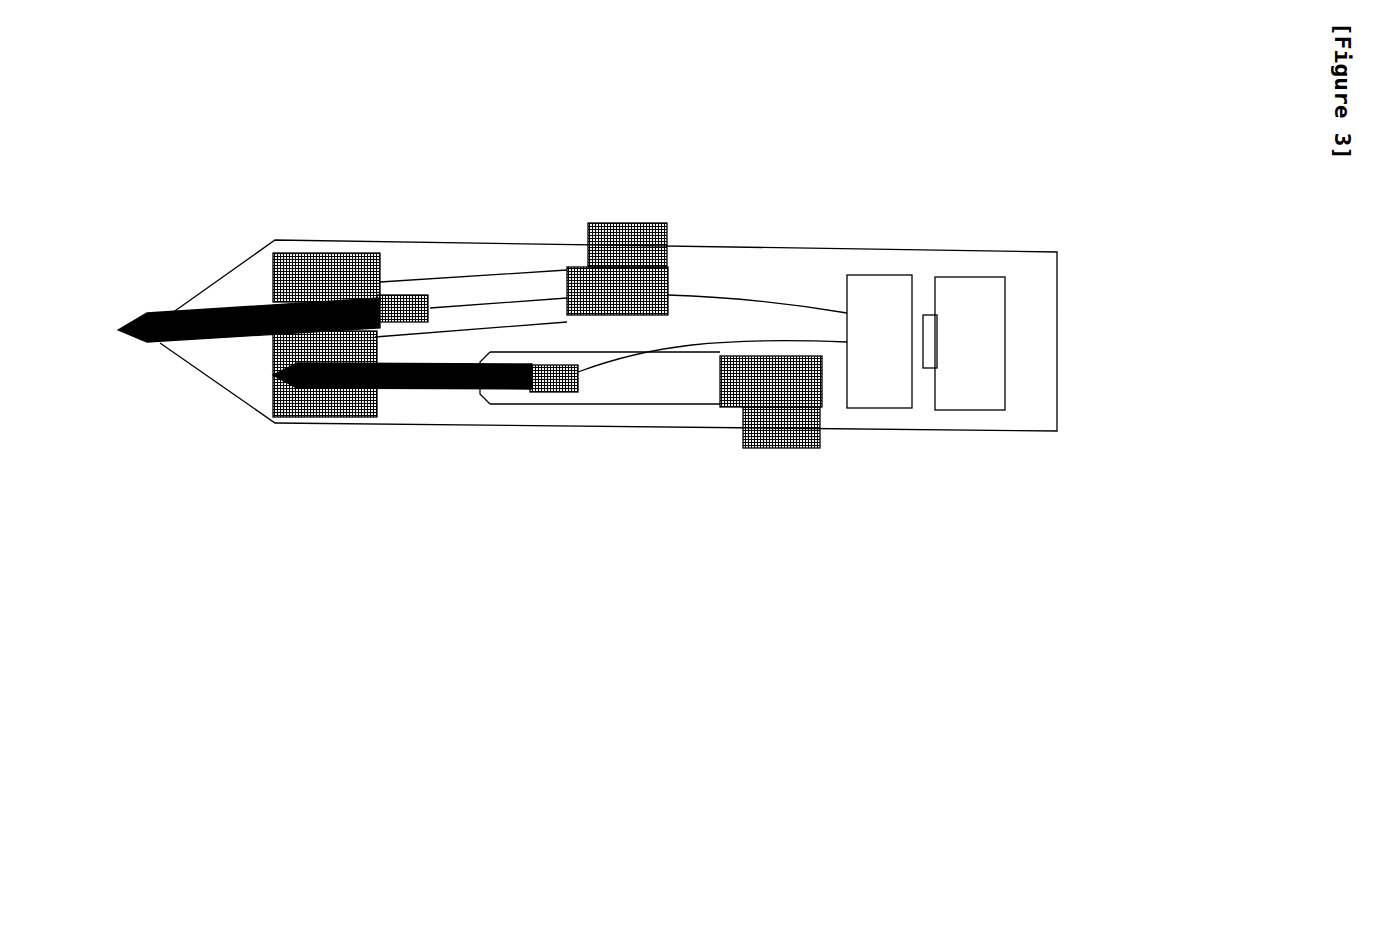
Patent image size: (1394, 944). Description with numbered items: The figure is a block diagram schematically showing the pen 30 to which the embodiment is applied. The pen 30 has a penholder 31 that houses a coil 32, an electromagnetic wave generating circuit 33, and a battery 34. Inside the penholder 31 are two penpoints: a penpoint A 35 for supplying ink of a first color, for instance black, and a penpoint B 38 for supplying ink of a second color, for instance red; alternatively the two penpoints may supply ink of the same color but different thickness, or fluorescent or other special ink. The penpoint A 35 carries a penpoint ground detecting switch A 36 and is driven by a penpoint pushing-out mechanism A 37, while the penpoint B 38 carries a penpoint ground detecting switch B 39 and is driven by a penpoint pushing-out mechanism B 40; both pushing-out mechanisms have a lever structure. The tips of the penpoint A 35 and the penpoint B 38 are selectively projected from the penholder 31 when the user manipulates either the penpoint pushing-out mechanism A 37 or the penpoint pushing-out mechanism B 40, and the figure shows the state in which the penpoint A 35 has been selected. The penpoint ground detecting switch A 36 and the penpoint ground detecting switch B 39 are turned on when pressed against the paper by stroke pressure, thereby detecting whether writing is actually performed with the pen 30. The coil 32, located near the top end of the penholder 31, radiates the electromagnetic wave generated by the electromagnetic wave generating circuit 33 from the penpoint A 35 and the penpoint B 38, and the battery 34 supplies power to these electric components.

The pen 30 is at (591, 135).
The penholder 31 is at (1012, 252).
The coil 32 is at (323, 417).
The electromagnetic wave generating circuit 33 is at (860, 400).
The battery 34 is at (983, 390).
The penpoint A 35 is at (175, 310).
The penpoint ground detecting switch A 36 is at (403, 295).
The penpoint pushing-out mechanism A 37 is at (666, 223).
The penpoint B 38 is at (458, 392).
The penpoint ground detecting switch B 39 is at (550, 385).
The penpoint pushing-out mechanism B 40 is at (818, 443).